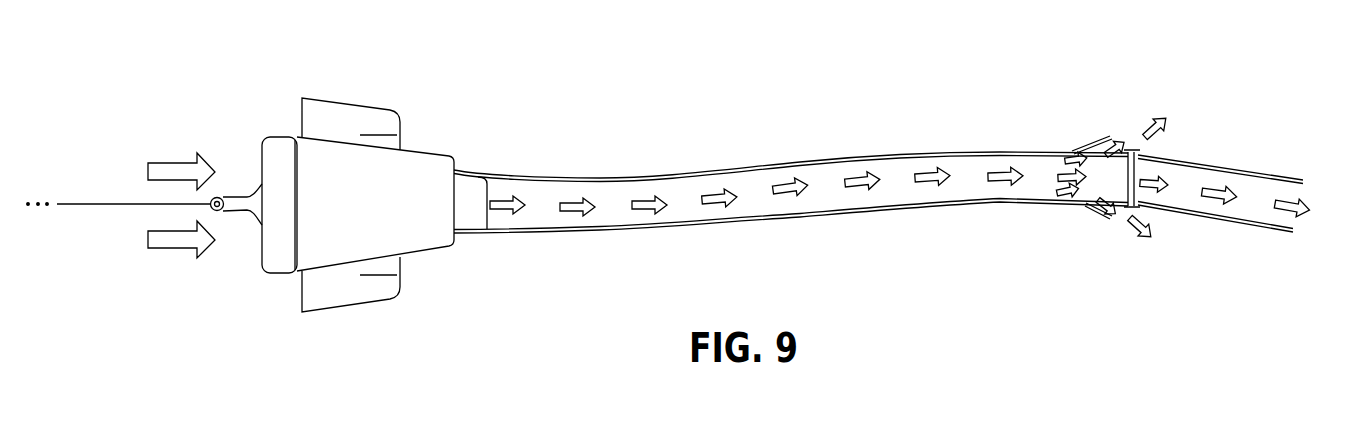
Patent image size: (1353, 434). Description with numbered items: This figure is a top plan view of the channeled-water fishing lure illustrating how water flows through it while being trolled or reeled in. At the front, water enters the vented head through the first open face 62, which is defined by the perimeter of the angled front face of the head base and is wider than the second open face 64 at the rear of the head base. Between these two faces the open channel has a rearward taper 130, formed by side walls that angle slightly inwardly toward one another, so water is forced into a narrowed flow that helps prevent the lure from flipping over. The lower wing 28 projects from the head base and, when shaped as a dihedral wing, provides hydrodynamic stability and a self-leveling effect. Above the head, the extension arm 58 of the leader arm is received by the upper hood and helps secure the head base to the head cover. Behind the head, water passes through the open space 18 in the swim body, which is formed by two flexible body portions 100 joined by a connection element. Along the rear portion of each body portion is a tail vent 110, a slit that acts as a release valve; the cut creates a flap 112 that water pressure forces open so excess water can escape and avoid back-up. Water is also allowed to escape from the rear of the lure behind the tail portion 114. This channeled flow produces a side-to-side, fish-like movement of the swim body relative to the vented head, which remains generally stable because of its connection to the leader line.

The open space 18 is at (791, 187).
The lower wing 28 is at (332, 118).
The extension arm 58 is at (256, 207).
The first open face 62 is at (262, 163).
The second open face 64 is at (458, 218).
The flexible body portion 100 is at (729, 168).
The tail vent 110 is at (1080, 223).
The flap 112 is at (1092, 141).
The tail portion 114 is at (1302, 180).
The rearward taper 130 is at (411, 153).